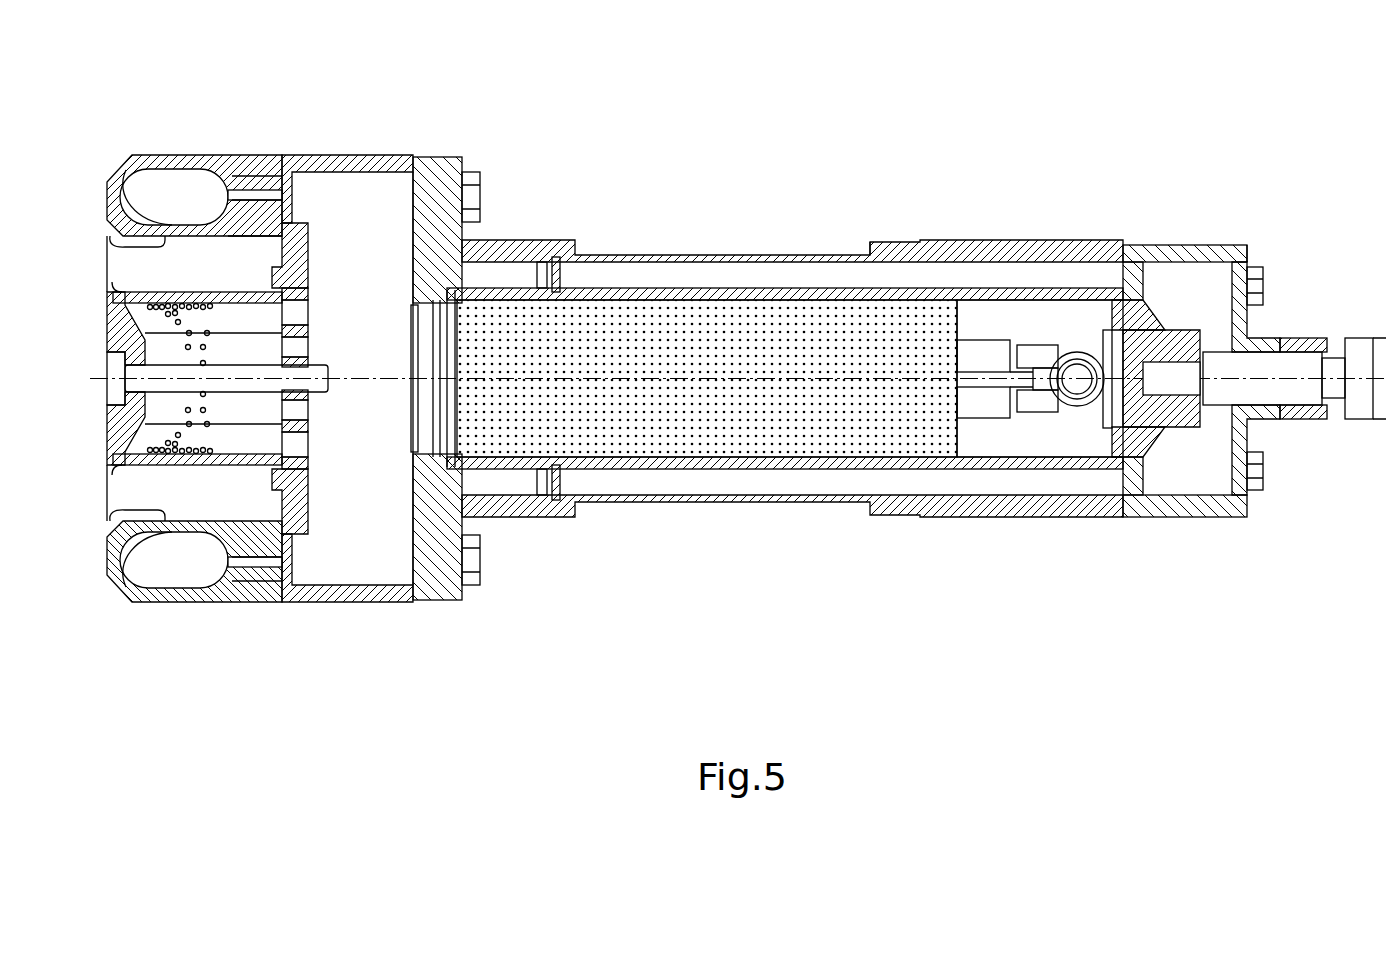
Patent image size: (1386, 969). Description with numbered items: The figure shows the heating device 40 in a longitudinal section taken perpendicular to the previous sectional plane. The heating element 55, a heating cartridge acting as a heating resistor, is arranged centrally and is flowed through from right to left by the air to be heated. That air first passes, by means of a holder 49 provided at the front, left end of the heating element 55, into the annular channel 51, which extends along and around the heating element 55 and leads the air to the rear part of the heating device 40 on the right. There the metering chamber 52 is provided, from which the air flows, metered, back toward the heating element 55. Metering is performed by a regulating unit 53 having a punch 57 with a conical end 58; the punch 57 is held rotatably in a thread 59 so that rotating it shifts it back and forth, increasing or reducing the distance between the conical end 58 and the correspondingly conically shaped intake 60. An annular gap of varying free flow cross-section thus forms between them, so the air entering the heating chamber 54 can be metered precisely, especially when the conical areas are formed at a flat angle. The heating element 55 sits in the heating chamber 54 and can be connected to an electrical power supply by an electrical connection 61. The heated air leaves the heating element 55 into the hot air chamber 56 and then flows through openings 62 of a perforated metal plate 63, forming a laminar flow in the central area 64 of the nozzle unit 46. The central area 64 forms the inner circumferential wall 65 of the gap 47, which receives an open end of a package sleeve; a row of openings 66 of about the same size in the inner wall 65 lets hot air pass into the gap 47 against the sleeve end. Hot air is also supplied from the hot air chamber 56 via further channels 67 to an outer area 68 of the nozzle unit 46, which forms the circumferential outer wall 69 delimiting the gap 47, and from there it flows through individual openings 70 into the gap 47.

The heating device 40 is at (912, 152).
The nozzle unit 46 is at (417, 92).
The gap 47 is at (133, 267).
The holder 49 is at (510, 250).
The annular channel 51 is at (675, 277).
The metering chamber 52 is at (1190, 490).
The regulating unit 53 is at (1305, 280).
The heating chamber 54 is at (1030, 325).
The heating element 55 is at (745, 425).
The hot air chamber 56 is at (355, 545).
The punch 57 is at (1295, 395).
The conical end 58 is at (1185, 325).
The thread 59 is at (1310, 335).
The conical intake 60 is at (1148, 300).
The electrical connection 61 is at (985, 400).
The openings 62 is at (293, 313).
The perforated metal plate 63 is at (300, 258).
The central area 64 is at (245, 410).
The inner circumferential wall 65 is at (125, 298).
The row of openings 66 is at (148, 302).
The further channels 67 is at (257, 190).
The outer area 68 is at (176, 195).
The outer wall 69 is at (128, 243).
The openings 70 is at (125, 197).